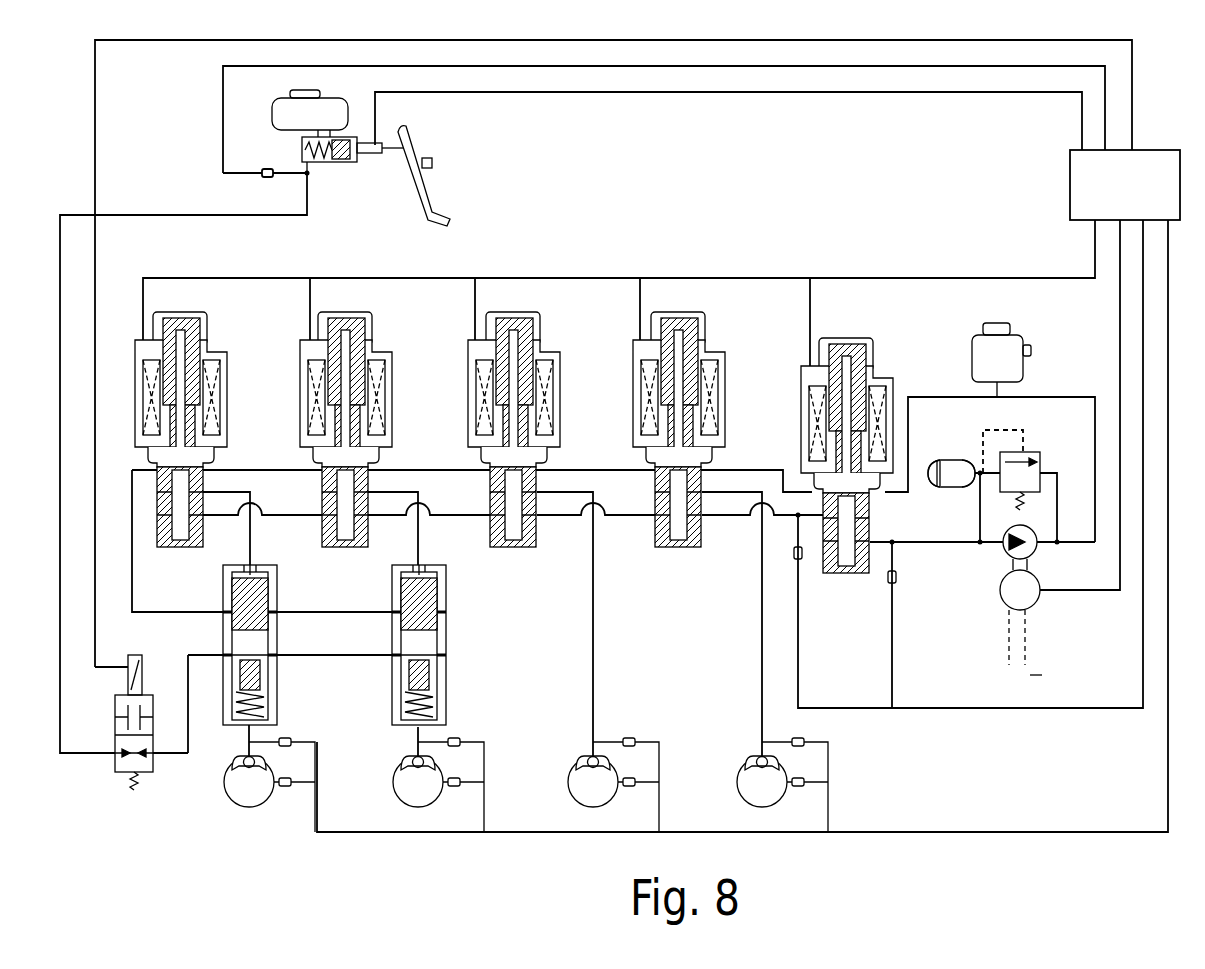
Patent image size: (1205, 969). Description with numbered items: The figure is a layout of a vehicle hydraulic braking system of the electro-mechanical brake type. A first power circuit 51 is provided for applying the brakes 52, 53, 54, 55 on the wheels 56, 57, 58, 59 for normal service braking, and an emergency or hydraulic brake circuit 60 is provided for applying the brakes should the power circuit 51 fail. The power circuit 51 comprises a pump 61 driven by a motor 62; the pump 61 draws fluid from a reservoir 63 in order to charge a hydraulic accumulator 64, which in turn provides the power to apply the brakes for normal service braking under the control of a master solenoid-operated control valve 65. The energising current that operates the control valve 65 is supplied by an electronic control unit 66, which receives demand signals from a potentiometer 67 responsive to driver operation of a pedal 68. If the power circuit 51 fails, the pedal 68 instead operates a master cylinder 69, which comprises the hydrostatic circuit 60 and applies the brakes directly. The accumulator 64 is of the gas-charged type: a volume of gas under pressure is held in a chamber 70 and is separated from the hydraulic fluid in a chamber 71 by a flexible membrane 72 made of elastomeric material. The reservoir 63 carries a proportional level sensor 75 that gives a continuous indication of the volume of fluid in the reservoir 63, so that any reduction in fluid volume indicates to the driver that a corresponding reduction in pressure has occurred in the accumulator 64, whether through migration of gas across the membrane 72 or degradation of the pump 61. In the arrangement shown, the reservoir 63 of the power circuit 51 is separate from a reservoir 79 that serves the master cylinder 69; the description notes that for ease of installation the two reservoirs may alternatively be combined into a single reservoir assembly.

The power circuit 51 is at (1057, 418).
The brake 52 is at (258, 767).
The brake 53 is at (422, 767).
The brake 54 is at (598, 760).
The brake 55 is at (752, 760).
The wheel 56 is at (232, 790).
The wheel 57 is at (410, 782).
The wheel 58 is at (585, 795).
The wheel 59 is at (765, 798).
The hydraulic brake circuit 60 is at (332, 160).
The pump 61 is at (1010, 549).
The motor 62 is at (1041, 600).
The reservoir 63 is at (985, 360).
The hydraulic accumulator 64 is at (960, 460).
The master solenoid-operated control valve 65 is at (853, 355).
The electronic control unit 66 is at (1083, 172).
The potentiometer 67 is at (432, 163).
The pedal 68 is at (428, 204).
The master cylinder 69 is at (318, 162).
The gas chamber 70 is at (934, 481).
The hydraulic fluid chamber 71 is at (962, 486).
The flexible membrane 72 is at (928, 467).
The proportional level sensor 75 is at (1031, 350).
The reservoir 79 is at (282, 113).